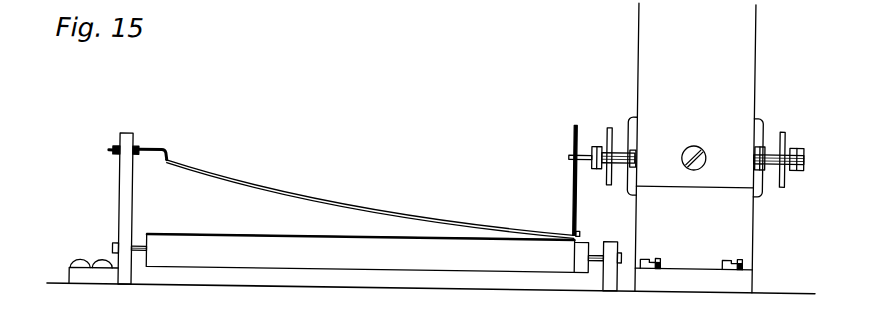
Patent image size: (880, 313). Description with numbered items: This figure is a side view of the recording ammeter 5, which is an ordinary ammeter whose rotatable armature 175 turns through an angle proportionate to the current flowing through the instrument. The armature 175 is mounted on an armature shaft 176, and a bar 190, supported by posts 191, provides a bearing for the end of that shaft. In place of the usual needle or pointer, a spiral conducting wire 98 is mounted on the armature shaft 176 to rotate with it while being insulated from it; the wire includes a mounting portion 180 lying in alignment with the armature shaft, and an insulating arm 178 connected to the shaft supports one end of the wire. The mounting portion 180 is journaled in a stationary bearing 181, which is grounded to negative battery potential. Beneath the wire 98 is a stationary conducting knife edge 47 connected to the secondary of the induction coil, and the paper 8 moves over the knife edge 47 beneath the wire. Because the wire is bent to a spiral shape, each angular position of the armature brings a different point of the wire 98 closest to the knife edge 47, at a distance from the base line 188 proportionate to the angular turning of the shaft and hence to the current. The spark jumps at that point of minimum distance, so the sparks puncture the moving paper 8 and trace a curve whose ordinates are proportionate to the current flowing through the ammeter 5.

The recording ammeter 5 is at (745, 30).
The paper 8 is at (351, 253).
The stationary conducting knife edge 47 is at (189, 238).
The inclined guide plate 98 is at (304, 193).
The rotatable armature 175 is at (761, 108).
The armature shaft 176 is at (576, 147).
The insulating arm 178 is at (574, 188).
The mounting portion 180 is at (146, 142).
The stationary bearing 181 is at (111, 145).
The base line 188 is at (563, 250).
The bar 190 is at (593, 137).
The posts 191 is at (618, 132).